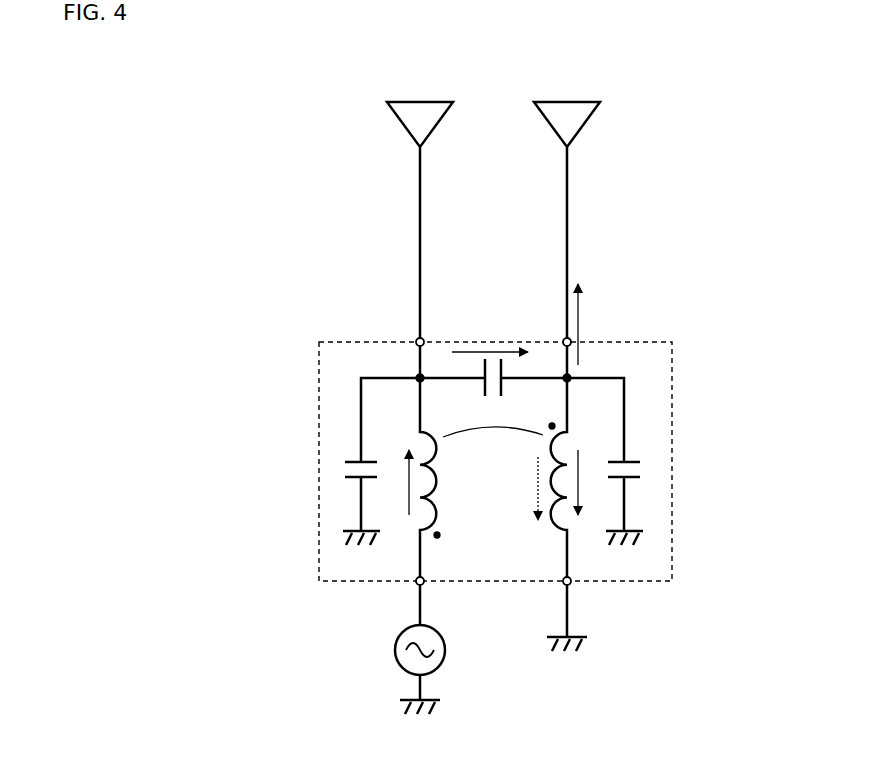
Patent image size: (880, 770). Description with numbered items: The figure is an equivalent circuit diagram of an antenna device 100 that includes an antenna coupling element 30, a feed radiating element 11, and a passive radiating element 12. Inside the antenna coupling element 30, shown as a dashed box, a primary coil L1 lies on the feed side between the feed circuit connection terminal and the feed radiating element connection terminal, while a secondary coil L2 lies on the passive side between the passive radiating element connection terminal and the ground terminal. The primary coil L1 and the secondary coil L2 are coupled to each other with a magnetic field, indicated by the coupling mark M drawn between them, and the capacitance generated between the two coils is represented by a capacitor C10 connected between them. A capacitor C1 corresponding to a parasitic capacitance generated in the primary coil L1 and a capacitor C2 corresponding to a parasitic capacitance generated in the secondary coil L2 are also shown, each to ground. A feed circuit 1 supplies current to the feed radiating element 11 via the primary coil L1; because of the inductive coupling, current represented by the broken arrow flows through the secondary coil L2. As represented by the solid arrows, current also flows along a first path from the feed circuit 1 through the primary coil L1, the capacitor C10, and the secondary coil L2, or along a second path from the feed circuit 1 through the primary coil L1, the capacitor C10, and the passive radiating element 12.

The antenna device 100 is at (239, 156).
The antenna coupling element 30 is at (672, 342).
The feed radiating element 11 is at (420, 100).
The passive radiating element 12 is at (567, 100).
The feed circuit 1 is at (395, 650).
The capacitor C1 is at (374, 461).
The capacitor C2 is at (617, 461).
The capacitor C10 is at (493, 374).
The primary coil L1 is at (439, 463).
The secondary coil L2 is at (541, 463).
The mutual inductance coupling M is at (493, 418).